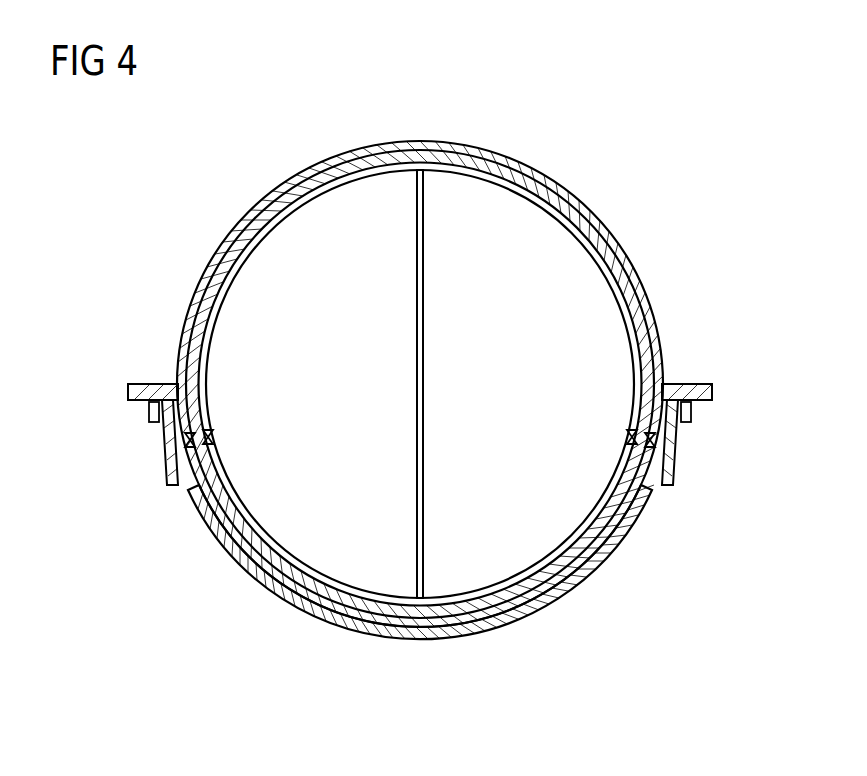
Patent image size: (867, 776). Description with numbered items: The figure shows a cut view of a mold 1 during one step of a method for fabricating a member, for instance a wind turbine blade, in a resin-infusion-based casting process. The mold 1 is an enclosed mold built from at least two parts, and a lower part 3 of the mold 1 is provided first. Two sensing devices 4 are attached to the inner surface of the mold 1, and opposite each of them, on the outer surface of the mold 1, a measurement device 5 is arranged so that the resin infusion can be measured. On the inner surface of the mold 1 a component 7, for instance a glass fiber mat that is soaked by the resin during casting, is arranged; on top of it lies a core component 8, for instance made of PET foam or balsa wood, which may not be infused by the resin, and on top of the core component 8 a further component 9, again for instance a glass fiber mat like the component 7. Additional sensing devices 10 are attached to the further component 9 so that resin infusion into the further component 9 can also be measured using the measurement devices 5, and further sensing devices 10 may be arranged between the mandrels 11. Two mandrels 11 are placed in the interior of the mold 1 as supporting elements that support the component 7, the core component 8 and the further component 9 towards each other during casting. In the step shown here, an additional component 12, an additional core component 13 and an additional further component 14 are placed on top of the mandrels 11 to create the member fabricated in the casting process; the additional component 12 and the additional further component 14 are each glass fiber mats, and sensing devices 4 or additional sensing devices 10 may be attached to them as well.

The mold 1 is at (683, 390).
The lower part 3 is at (596, 560).
The sensing device 4 is at (170, 440).
The measurement device 5 is at (152, 412).
The component 7 is at (256, 567).
The core component 8 is at (296, 585).
The further component 9 is at (338, 597).
The additional sensing device 10 is at (212, 446).
The mandrel 11 is at (345, 213).
The additional component 12 is at (213, 268).
The additional core component 13 is at (247, 233).
The additional further component 14 is at (200, 332).